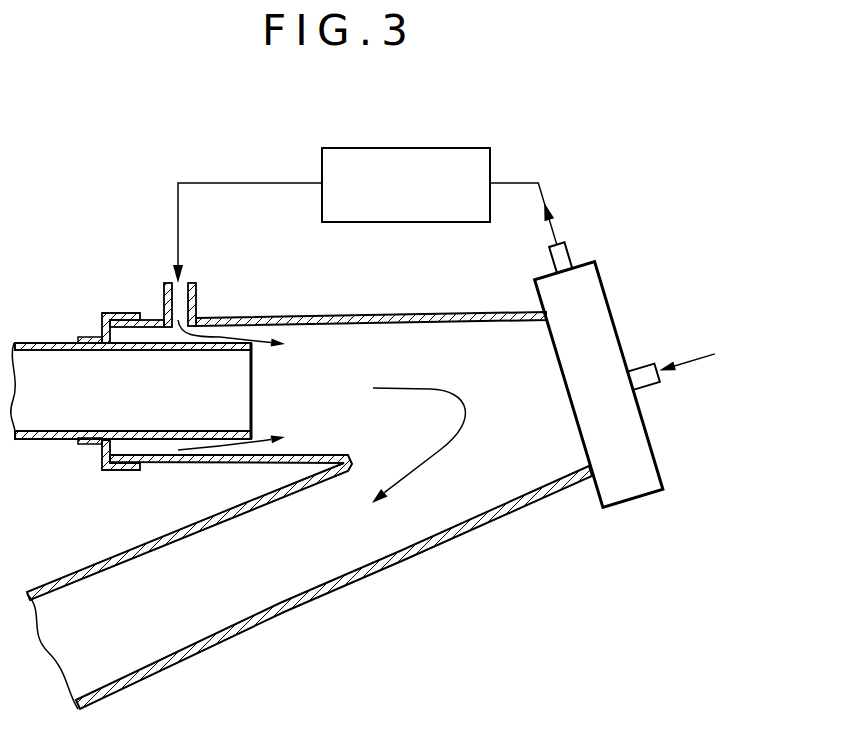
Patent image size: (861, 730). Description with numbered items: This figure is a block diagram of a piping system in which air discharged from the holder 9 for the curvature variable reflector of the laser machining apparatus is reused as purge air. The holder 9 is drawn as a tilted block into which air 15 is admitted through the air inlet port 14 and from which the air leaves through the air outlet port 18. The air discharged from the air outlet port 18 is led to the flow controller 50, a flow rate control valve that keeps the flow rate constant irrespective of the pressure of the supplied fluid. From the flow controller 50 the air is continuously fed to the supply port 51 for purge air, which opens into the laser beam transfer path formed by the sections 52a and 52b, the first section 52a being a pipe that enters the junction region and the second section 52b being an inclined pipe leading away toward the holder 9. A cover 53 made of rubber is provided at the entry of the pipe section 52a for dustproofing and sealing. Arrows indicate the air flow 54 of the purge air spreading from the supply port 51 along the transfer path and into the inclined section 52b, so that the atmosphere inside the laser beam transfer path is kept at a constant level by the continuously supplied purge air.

The holder for a curvature variable reflector 9 is at (664, 478).
The air inlet port 14 is at (648, 388).
The air 15 is at (697, 360).
The air outlet port 18 is at (568, 252).
The flow controller 50 is at (412, 147).
The supply port for purge air 51 is at (197, 291).
The laser beam transfer path 52a is at (41, 442).
The laser beam transfer path 52b is at (492, 524).
The cover made with rubber 53 is at (118, 312).
The air flow 54 is at (286, 318).